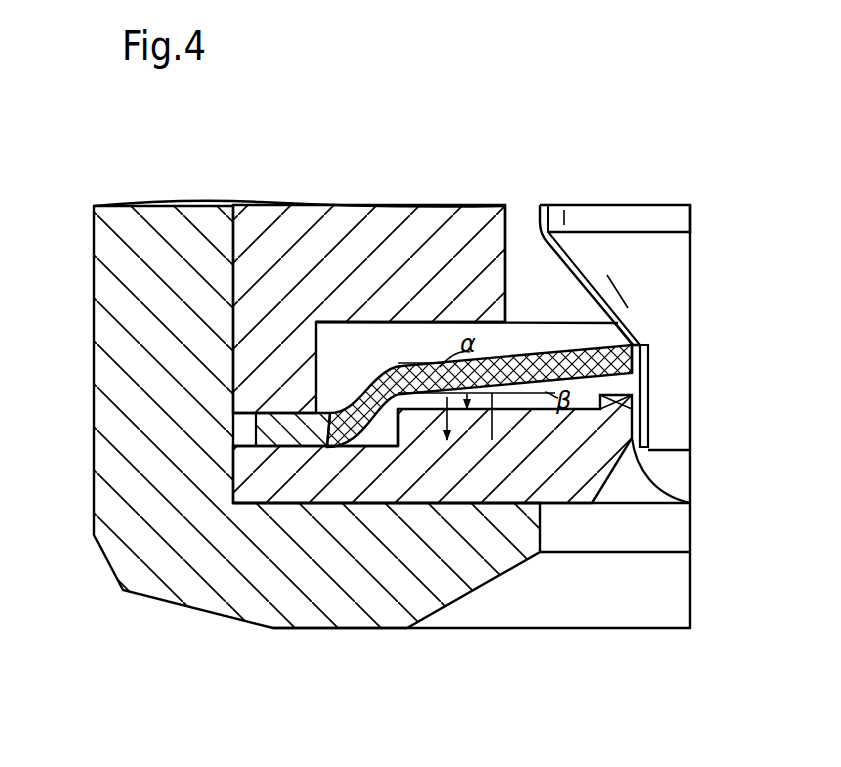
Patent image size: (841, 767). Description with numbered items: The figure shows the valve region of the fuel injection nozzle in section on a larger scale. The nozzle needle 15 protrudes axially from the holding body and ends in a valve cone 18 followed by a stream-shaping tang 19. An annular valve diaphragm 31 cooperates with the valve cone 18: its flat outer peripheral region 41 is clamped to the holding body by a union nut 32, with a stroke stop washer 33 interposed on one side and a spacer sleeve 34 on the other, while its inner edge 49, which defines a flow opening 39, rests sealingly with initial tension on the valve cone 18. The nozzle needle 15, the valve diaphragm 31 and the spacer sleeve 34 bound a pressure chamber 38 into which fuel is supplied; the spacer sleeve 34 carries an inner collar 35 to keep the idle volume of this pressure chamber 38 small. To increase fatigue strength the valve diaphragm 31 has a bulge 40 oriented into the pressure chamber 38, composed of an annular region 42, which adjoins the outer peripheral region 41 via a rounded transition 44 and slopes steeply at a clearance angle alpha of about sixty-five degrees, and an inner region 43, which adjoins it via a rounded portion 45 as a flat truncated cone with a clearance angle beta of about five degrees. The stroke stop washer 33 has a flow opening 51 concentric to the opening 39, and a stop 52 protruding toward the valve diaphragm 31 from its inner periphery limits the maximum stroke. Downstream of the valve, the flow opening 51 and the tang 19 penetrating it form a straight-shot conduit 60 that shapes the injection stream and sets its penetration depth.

The nozzle needle 15 is at (613, 218).
The valve cone 18 is at (537, 250).
The stream-shaping tang 19 is at (648, 407).
The valve diaphragm 31 is at (437, 356).
The union nut 32 is at (107, 323).
The stroke stop washer 33 is at (555, 492).
The spacer sleeve 34 is at (264, 230).
The inner collar 35 is at (468, 225).
The pressure chamber 38 is at (348, 345).
The flow opening 39 is at (648, 350).
The bulge 40 is at (467, 410).
The outer peripheral region 41 is at (283, 437).
The annular region 42 is at (400, 450).
The inner region 43 is at (492, 440).
The rounded transition 44 is at (350, 505).
The rounded portion 45 is at (447, 441).
The inner edge 49 is at (633, 342).
The flow opening 51 is at (640, 505).
The stop 52 is at (653, 433).
The straight-shot conduit 60 is at (655, 462).